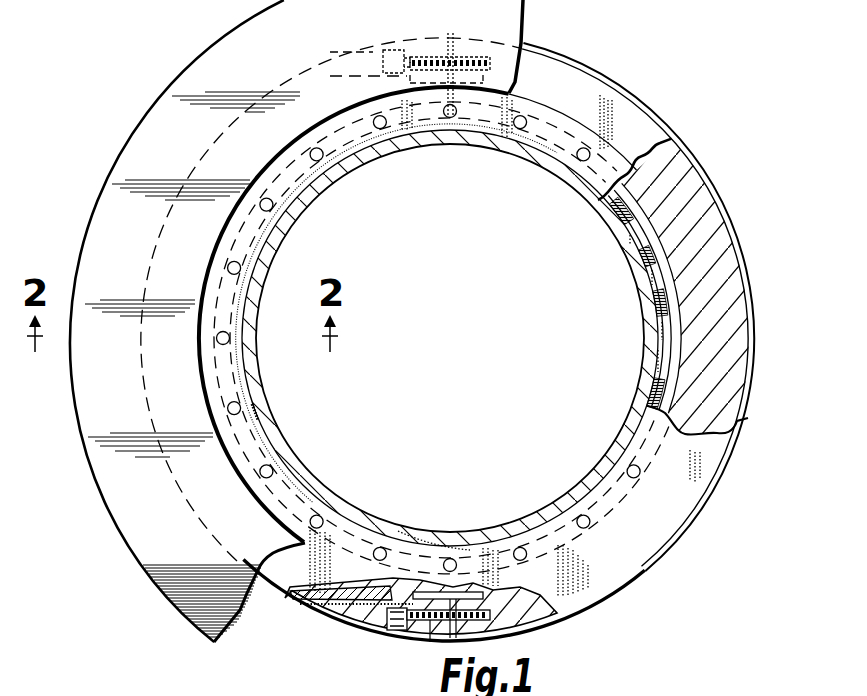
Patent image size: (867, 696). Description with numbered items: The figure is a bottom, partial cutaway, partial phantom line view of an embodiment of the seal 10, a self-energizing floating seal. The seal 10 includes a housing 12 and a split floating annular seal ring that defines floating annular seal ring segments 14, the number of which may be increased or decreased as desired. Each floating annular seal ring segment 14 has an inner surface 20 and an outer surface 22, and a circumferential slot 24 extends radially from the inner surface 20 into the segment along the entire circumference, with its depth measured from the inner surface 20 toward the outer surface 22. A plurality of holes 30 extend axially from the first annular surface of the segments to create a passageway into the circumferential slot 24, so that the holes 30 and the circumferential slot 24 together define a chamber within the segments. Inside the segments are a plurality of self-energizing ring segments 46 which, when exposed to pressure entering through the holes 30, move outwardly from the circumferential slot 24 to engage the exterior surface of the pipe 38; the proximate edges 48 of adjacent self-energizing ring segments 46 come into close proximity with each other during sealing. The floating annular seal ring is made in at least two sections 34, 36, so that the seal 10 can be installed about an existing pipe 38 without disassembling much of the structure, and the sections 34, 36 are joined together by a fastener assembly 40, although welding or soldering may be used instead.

The seal 10 is at (498, 342).
The housing 12 is at (150, 524).
The floating annular seal ring segment 14 is at (618, 120).
The inner surface 20 is at (483, 527).
The outer surface 22 is at (673, 547).
The circumferential slot 24 is at (598, 75).
The holes 30 is at (634, 466).
The section 34 is at (290, 573).
The section 36 is at (550, 70).
The pipe 38 is at (430, 522).
The fastener assembly 40 is at (430, 622).
The self-energizing ring segments 46 is at (640, 227).
The proximate edges 48 is at (660, 277).